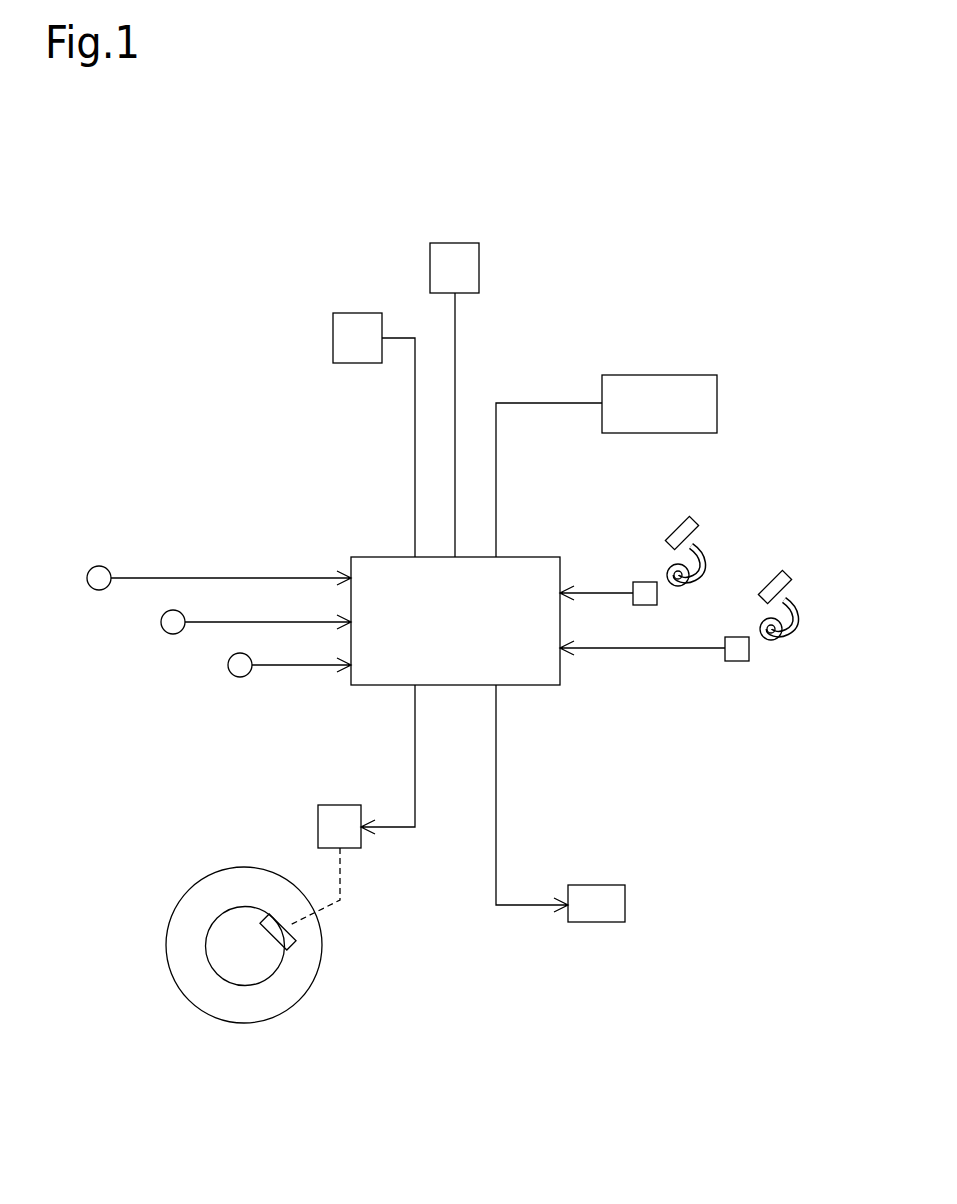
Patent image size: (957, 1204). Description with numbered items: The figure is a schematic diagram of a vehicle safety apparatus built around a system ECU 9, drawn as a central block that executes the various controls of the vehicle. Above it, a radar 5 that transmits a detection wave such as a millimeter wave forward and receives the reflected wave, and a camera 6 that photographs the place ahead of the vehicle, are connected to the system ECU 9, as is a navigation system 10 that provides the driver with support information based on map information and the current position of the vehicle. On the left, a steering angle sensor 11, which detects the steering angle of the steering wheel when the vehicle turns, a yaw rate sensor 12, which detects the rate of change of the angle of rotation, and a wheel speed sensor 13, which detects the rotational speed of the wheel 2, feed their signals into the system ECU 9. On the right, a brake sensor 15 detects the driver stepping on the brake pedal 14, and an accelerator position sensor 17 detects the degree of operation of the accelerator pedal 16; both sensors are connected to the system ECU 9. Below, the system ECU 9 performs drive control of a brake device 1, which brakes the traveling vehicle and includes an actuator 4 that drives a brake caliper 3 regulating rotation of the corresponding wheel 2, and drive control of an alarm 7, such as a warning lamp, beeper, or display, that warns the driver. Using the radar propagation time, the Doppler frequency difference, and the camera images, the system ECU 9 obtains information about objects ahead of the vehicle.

The brake device 1 is at (278, 805).
The wheel 2 is at (312, 987).
The brake caliper 3 is at (290, 912).
The actuator 4 is at (318, 817).
The radar 5 is at (359, 313).
The camera 6 is at (455, 243).
The alarm 7 is at (598, 884).
The system ECU 9 is at (534, 557).
The navigation system 10 is at (717, 403).
The steering angle sensor 11 is at (87, 578).
The yaw rate sensor 12 is at (161, 622).
The wheel speed sensor 13 is at (228, 665).
The brake pedal 14 is at (668, 524).
The brake sensor 15 is at (644, 582).
The accelerator pedal 16 is at (762, 579).
The accelerator position sensor 17 is at (736, 637).